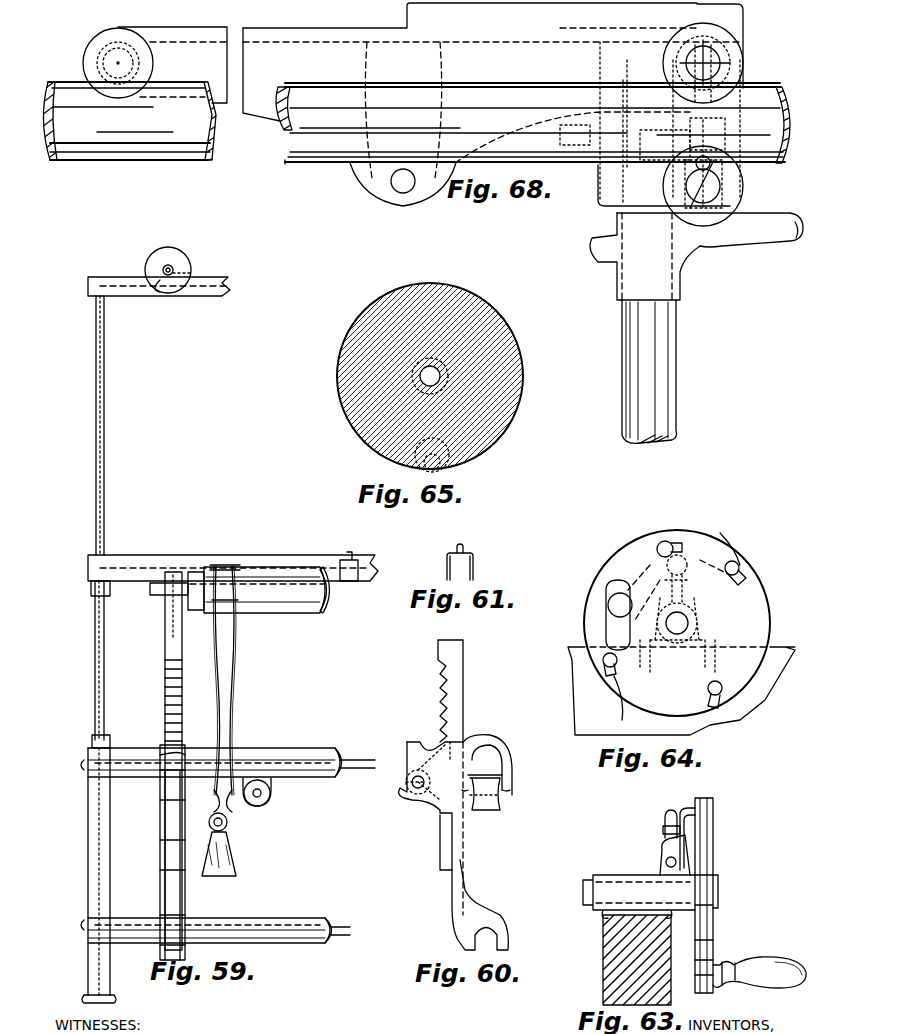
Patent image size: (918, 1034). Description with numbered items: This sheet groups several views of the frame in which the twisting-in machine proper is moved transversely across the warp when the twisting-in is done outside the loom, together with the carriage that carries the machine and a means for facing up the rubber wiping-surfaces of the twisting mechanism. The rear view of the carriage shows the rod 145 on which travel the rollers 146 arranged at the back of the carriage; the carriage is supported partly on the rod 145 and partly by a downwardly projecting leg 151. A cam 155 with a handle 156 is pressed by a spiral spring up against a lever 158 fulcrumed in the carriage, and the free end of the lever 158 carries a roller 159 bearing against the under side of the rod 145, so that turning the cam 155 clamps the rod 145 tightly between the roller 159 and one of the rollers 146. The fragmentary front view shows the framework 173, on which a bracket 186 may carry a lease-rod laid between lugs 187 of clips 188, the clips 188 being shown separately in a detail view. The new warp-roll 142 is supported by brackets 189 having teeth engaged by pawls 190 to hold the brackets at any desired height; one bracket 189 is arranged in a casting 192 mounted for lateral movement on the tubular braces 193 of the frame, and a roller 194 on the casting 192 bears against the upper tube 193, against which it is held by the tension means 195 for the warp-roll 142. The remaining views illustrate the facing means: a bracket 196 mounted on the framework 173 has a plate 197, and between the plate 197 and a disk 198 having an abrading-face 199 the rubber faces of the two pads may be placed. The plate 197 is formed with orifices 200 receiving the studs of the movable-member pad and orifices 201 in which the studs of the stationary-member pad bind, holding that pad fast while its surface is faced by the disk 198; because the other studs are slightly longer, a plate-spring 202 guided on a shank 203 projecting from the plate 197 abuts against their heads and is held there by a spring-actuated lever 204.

In FIG. 59, the beam for the new warp 142 is at (240, 603).
In FIG. 68, the rod 145 is at (300, 165).
In FIG. 68, the rollers 146 is at (153, 70).
In FIG. 68, the leg 151 is at (663, 368).
In FIG. 68, the cam 155 is at (680, 268).
In FIG. 68, the handle 156 is at (760, 240).
In FIG. 68, the lever 158 is at (700, 212).
In FIG. 68, the roller 159 is at (743, 190).
In FIG. 59, the framework 173 is at (105, 505).
In FIG. 59, the bracket 186 is at (105, 640).
In FIG. 61, the lugs 187 is at (460, 540).
In FIG. 59, the clips 188 is at (358, 560).
In FIG. 61, the clips 188 is at (475, 565).
In FIG. 59, the brackets 189 is at (182, 655).
In FIG. 60, the brackets 189 is at (463, 708).
In FIG. 59, the pawls 190 is at (180, 757).
In FIG. 60, the pawls 190 is at (410, 770).
In FIG. 59, the casting 192 is at (185, 895).
In FIG. 59, the tubular braces 193 is at (318, 779).
In FIG. 59, the roller 194 is at (258, 808).
In FIG. 60, the roller 194 is at (490, 812).
In FIG. 59, the tension means 195 is at (236, 705).
In FIG. 63, the bracket 196 is at (615, 875).
In FIG. 64, the plate 197 is at (770, 620).
In FIG. 63, the plate 197 is at (747, 985).
In FIG. 59, the disk 198 is at (185, 262).
In FIG. 63, the disk 198 is at (713, 925).
In FIG. 65, the abrading-face 199 is at (515, 408).
In FIG. 63, the abrading-face 199 is at (715, 862).
In FIG. 64, the orifices 200 is at (668, 545).
In FIG. 64, the orifices 201 is at (710, 695).
In FIG. 64, the plate-spring 202 is at (618, 607).
In FIG. 63, the plate-spring 202 is at (688, 808).
In FIG. 63, the shank 203 is at (663, 830).
In FIG. 63, the spring-actuated lever 204 is at (660, 850).